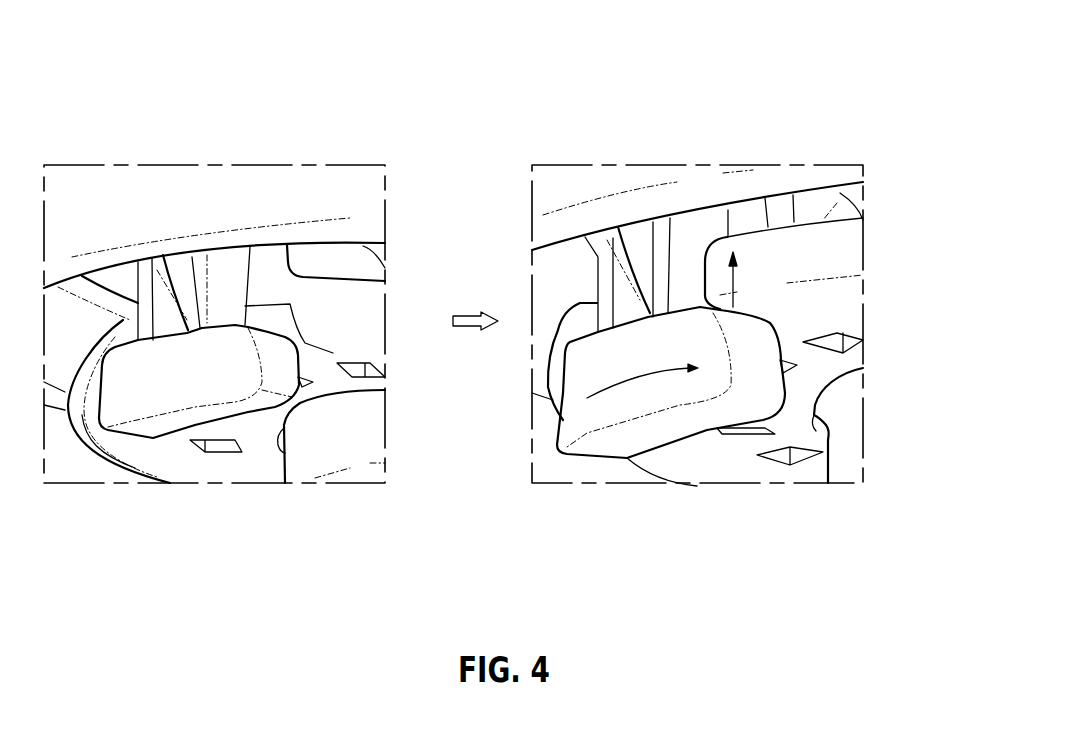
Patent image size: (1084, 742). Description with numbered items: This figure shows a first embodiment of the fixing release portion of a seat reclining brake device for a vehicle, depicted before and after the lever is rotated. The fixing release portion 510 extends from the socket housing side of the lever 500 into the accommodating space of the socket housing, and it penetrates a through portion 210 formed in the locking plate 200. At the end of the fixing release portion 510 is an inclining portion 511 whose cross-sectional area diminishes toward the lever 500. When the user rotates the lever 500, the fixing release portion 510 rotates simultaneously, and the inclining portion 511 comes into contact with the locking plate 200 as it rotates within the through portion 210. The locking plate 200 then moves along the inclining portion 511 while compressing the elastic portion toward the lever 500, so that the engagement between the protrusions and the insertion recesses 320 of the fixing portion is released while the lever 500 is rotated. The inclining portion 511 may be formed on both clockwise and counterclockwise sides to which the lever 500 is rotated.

The lever 500 is at (147, 164).
The fixing release portion 510 is at (225, 287).
The inclining portion 511 is at (109, 413).
The through portion 210 is at (265, 317).
The locking plate 200 is at (805, 255).
The insertion recesses 320 is at (373, 368).